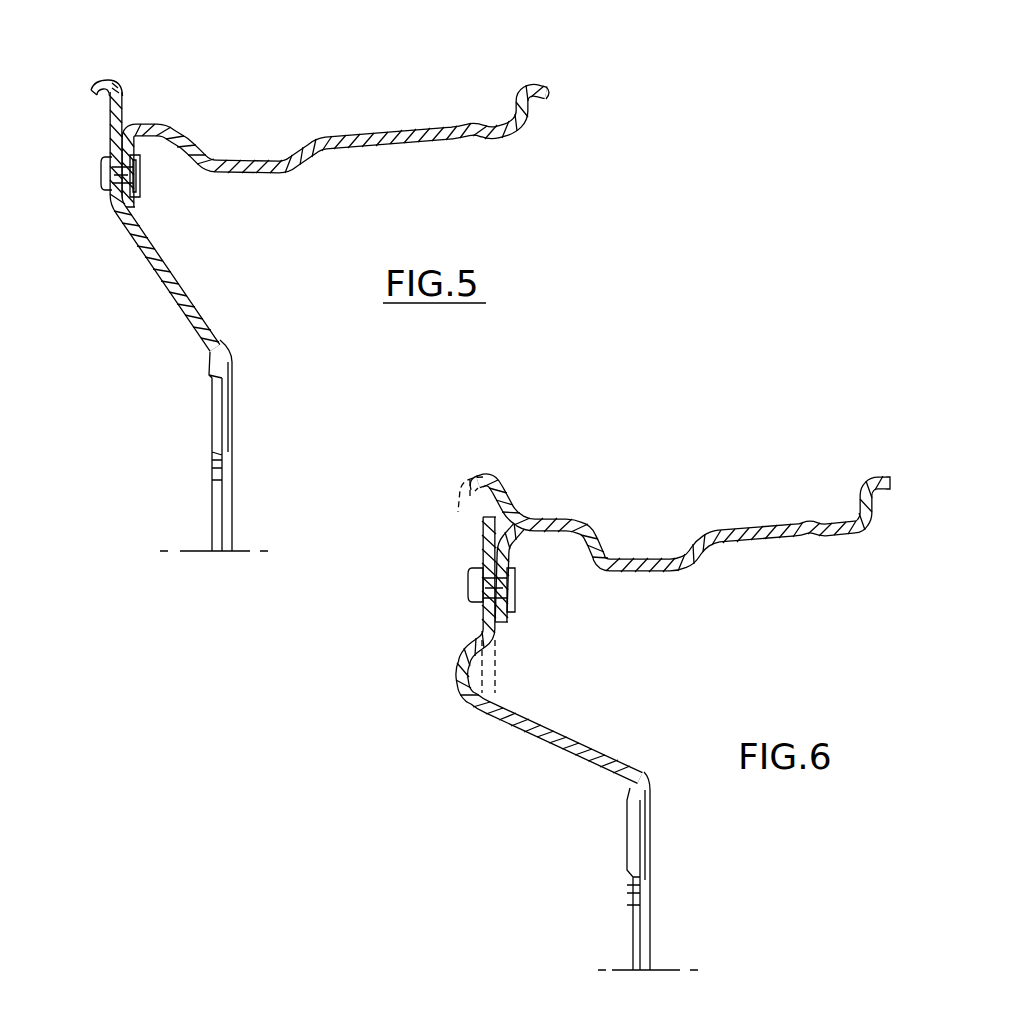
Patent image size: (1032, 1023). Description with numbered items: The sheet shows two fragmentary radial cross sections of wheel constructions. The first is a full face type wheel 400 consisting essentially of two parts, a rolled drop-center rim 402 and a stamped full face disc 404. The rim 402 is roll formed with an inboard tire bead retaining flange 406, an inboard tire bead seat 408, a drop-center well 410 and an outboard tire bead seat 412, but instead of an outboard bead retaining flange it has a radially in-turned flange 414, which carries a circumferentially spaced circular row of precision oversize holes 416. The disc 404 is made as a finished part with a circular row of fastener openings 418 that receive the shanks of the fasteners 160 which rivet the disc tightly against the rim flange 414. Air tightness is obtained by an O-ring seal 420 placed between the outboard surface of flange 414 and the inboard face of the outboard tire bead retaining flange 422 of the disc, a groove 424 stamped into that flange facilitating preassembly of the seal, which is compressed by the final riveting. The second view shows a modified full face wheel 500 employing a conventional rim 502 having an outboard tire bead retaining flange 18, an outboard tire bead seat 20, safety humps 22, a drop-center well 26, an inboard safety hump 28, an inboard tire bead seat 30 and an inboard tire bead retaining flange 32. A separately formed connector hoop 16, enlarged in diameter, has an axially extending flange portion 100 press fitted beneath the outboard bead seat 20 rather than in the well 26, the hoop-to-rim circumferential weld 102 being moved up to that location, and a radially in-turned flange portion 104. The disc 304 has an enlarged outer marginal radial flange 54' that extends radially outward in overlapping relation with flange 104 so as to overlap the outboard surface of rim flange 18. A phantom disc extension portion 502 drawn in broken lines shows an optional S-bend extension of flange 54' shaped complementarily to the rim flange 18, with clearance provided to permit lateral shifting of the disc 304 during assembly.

In FIG. 5, the wheel 400 is at (85, 128).
In FIG. 5, the rolled drop-center rim 402 is at (533, 113).
In FIG. 5, the stamped full face disc 404 is at (207, 348).
In FIG. 5, the inboard tire bead retaining flange 406 is at (519, 107).
In FIG. 5, the inboard tire bead seat 408 is at (487, 127).
In FIG. 5, the drop-center well 410 is at (250, 149).
In FIG. 5, the outboard tire bead seat 412 is at (157, 125).
In FIG. 5, the radially in-turned flange 414 is at (138, 213).
In FIG. 5, the precision oversize holes 416 is at (142, 178).
In FIG. 5, the fastener openings 418 is at (110, 169).
In FIG. 5, the O-ring seal 420 is at (328, 119).
In FIG. 5, the outboard tire bead retaining flange 422 is at (113, 84).
In FIG. 5, the groove 424 is at (161, 173).
In FIG. 5, the fasteners 160 is at (107, 193).
In FIG. 6, the wheel 500 is at (450, 527).
In FIG. 6, the rim / disc extension portion 502 is at (458, 491).
In FIG. 6, the connector hoop 16 is at (522, 552).
In FIG. 6, the outboard tire bead retaining flange 18 is at (513, 456).
In FIG. 6, the outboard tire bead seat 20 is at (524, 520).
In FIG. 6, the safety humps 22 is at (574, 519).
In FIG. 6, the drop-center well 26 is at (657, 534).
In FIG. 6, the inboard safety hump 28 is at (710, 534).
In FIG. 6, the inboard tire bead seat 30 is at (773, 518).
In FIG. 6, the inboard tire bead retaining flange 32 is at (868, 481).
In FIG. 6, the outer marginal radial flange 54' is at (541, 743).
In FIG. 6, the axially extending flange portion 100 is at (530, 548).
In FIG. 6, the circumferential weld 102 is at (535, 538).
In FIG. 6, the radially inwardly extending flange portion 104 is at (505, 627).
In FIG. 6, the disc 304 is at (482, 625).